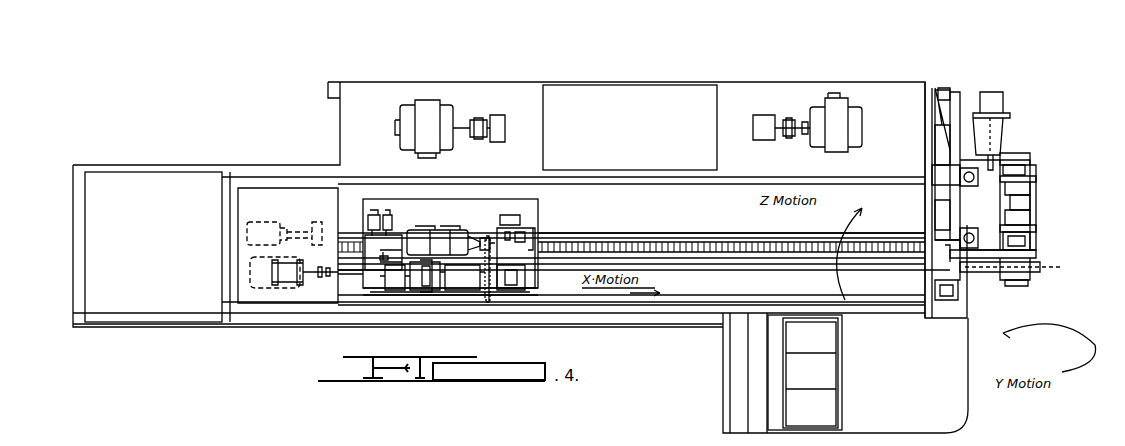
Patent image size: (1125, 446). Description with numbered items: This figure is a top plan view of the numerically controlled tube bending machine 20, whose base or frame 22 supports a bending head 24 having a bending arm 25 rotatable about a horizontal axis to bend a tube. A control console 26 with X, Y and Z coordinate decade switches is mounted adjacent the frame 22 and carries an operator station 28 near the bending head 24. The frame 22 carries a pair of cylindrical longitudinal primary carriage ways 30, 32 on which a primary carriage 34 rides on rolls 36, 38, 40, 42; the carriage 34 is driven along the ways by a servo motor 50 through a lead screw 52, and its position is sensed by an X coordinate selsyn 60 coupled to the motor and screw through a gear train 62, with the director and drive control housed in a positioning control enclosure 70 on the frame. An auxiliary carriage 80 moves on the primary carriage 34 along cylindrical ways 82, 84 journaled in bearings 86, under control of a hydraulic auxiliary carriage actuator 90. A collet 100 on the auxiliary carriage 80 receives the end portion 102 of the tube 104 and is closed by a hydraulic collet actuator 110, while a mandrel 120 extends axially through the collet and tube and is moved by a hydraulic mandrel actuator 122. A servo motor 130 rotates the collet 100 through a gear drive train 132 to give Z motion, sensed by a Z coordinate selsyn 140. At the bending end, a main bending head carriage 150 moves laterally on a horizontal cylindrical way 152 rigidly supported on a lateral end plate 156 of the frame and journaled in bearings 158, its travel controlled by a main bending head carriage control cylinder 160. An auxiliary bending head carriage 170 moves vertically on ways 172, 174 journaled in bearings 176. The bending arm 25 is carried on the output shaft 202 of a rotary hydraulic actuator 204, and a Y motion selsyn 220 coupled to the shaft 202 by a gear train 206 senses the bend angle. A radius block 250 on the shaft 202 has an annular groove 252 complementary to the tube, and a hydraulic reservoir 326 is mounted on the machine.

The numerically controlled tube bending machine 20 is at (203, 95).
The base or frame 22 is at (820, 373).
The bending head 24 is at (1088, 87).
The bending arm 25 is at (1045, 229).
The control console 26 is at (884, 74).
The operator station 28 is at (918, 386).
The primary carriage way 30 is at (709, 320).
The primary carriage way 32 is at (658, 226).
The primary carriage 34 is at (512, 193).
The roll 36 is at (390, 260).
The roll 38 is at (522, 300).
The roll 40 is at (540, 206).
The roll 42 is at (372, 230).
The servo motor 50 is at (250, 272).
The lead screw 52 is at (717, 234).
The X coordinate selsyn 60 is at (262, 222).
The gear train 62 is at (322, 300).
The positioning control enclosure 70 is at (178, 252).
The auxiliary carriage 80 is at (434, 232).
The cylindrical way 82 is at (398, 290).
The cylindrical way 84 is at (404, 236).
The bearings 86 is at (440, 278).
The hydraulic auxiliary carriage actuator 90 is at (395, 237).
The collet or chuck 100 is at (530, 270).
The end portion of tube 102 is at (560, 282).
The tube 104 is at (806, 277).
The hydraulic collet actuator 110 is at (458, 292).
The mandrel 120 is at (375, 258).
The hydraulic mandrel actuator 122 is at (300, 290).
The servo motor 130 is at (463, 225).
The gear drive train 132 is at (500, 272).
The Z coordinate selsyn 140 is at (548, 221).
The main bending head carriage 150 is at (1030, 165).
The horizontal cylindrical way 152 is at (945, 210).
The lateral end plate 156 is at (935, 190).
The bearings 158 is at (940, 175).
The main bending head carriage control cylinder 160 is at (945, 97).
The auxiliary bending head carriage 170 is at (1040, 196).
The way 172 is at (1002, 170).
The way 174 is at (1030, 216).
The bearings 176 is at (965, 210).
The output shaft 202 is at (1036, 250).
The rotary hydraulic actuator 204 is at (1040, 199).
The gear train 206 is at (992, 160).
The Y motion selsyn 220 is at (1011, 88).
The radius block 250 is at (1022, 284).
The annular groove 252 is at (1036, 268).
The reservoir 326 is at (645, 132).